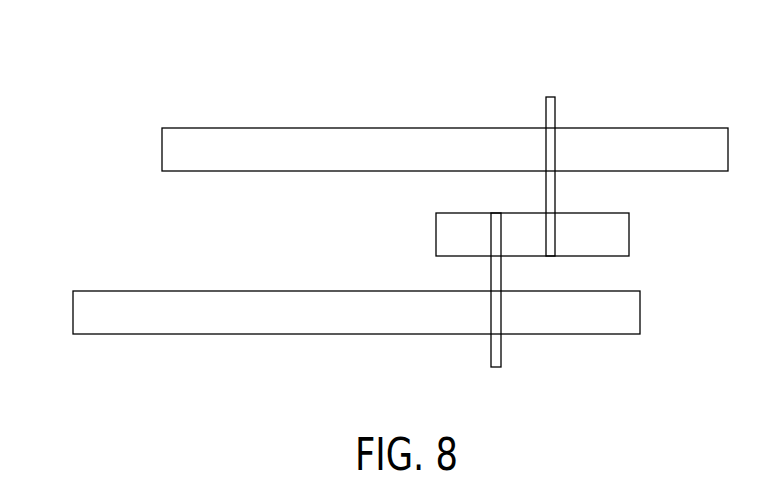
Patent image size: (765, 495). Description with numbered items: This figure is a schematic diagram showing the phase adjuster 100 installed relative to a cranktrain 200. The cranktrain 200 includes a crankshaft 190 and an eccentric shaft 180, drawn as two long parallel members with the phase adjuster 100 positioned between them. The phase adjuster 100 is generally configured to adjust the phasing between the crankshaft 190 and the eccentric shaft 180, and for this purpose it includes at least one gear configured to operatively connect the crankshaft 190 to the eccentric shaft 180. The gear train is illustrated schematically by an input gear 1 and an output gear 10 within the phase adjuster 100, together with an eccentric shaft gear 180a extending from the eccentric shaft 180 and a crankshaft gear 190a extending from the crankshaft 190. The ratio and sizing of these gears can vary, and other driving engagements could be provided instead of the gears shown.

The cranktrain 200 is at (292, 102).
The eccentric shaft 180 is at (170, 152).
The eccentric shaft gear 180a is at (548, 115).
The phase adjuster 100 is at (443, 222).
The crankshaft gear 190a is at (494, 352).
The input gear 1 is at (491, 233).
The output gear 10 is at (549, 228).
The crankshaft 190 is at (80, 313).